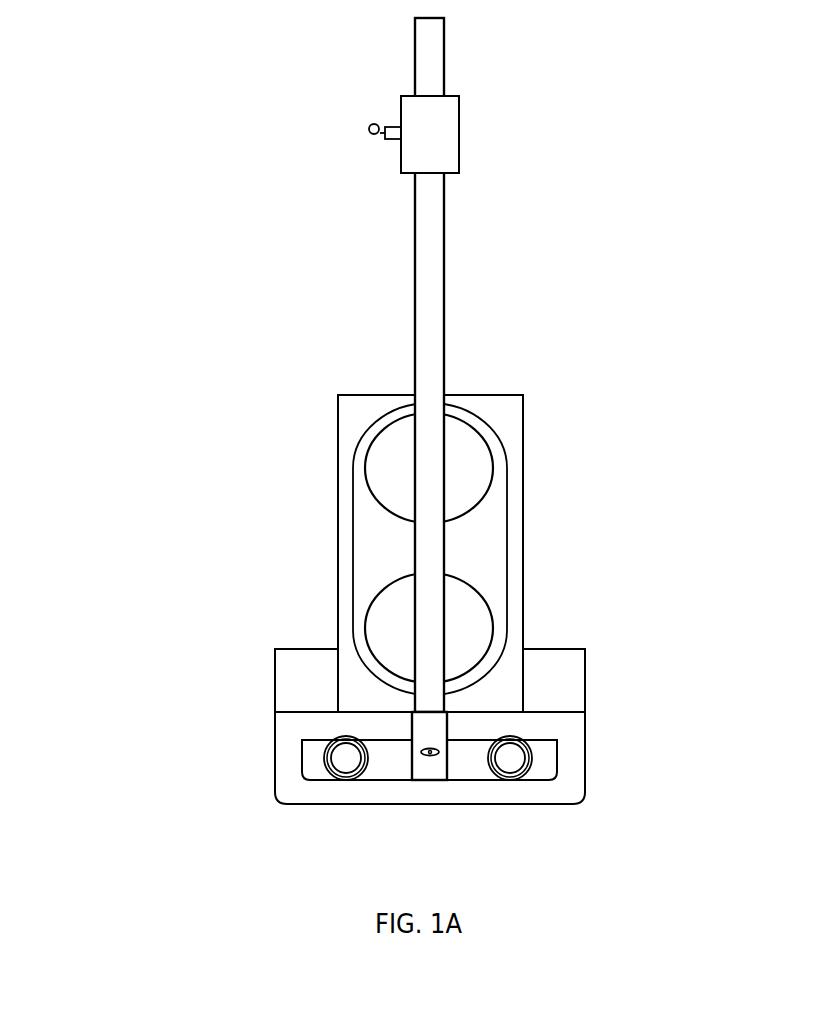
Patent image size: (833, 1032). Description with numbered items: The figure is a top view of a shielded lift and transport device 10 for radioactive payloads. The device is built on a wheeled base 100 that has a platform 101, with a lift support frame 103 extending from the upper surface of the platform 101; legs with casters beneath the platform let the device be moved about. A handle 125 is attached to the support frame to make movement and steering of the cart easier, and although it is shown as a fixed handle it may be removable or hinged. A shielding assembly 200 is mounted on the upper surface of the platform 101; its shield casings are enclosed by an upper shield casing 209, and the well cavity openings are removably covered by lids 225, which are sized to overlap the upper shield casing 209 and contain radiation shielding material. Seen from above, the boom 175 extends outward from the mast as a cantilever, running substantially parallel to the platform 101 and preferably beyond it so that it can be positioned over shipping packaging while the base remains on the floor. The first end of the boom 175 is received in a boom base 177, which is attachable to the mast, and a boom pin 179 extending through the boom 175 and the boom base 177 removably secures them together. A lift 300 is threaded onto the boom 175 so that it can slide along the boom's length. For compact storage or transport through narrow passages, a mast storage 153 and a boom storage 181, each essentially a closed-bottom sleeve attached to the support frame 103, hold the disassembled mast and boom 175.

The shielded lift and transport device 10 is at (181, 88).
The wheeled base 100 is at (270, 623).
The platform 101 is at (295, 680).
The lift support frame 103 is at (325, 725).
The handle 125 is at (317, 797).
The mast storage 153 is at (344, 758).
The boom 175 is at (428, 268).
The boom base 177 is at (441, 770).
The boom pin 179 is at (428, 757).
The boom storage 181 is at (510, 759).
The shielding assembly 200 is at (352, 497).
The upper shield casing 209 is at (382, 545).
The lid 225 is at (388, 448).
The lift 300 is at (435, 133).